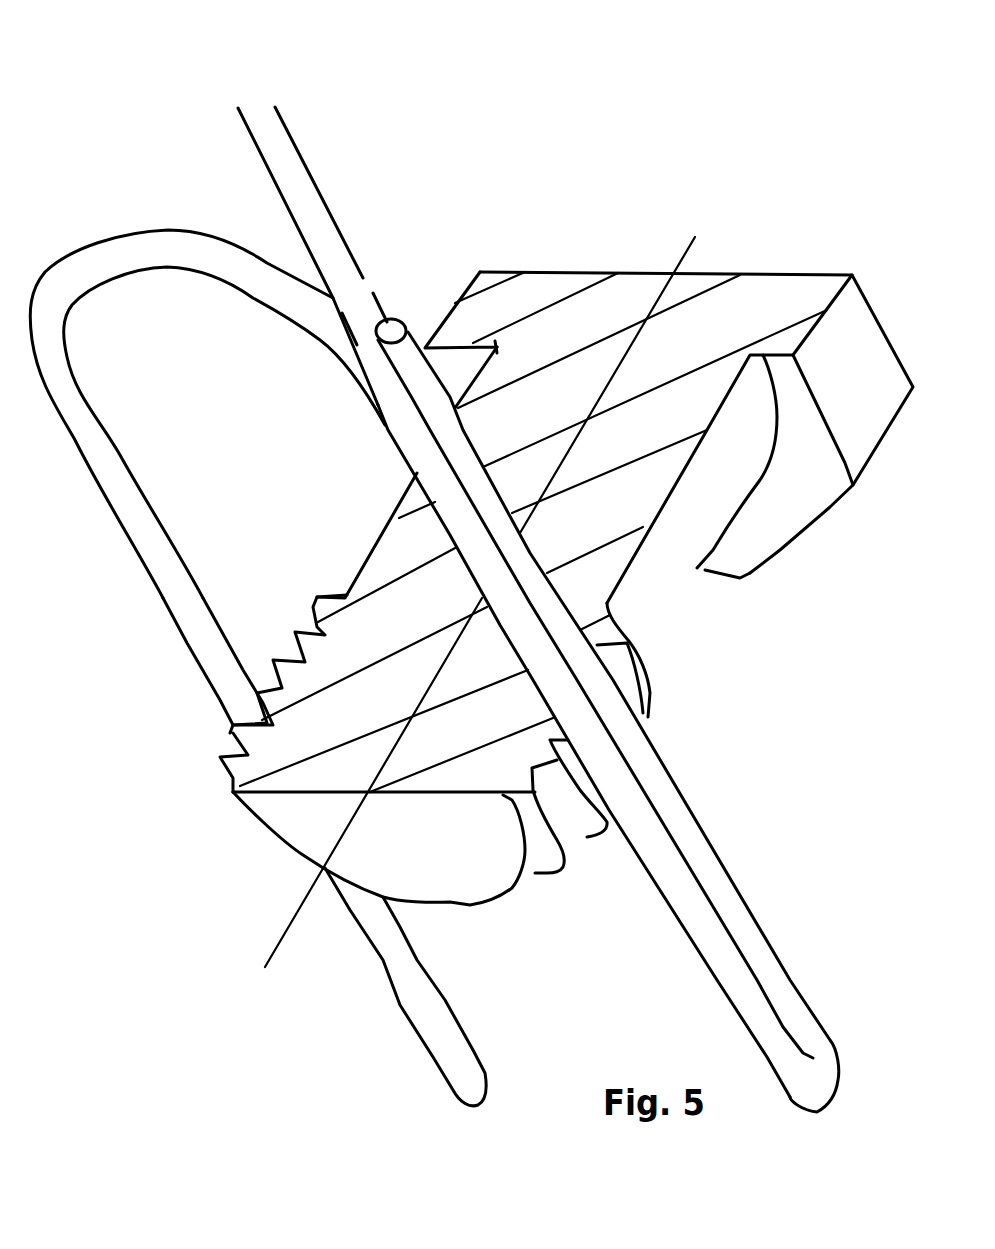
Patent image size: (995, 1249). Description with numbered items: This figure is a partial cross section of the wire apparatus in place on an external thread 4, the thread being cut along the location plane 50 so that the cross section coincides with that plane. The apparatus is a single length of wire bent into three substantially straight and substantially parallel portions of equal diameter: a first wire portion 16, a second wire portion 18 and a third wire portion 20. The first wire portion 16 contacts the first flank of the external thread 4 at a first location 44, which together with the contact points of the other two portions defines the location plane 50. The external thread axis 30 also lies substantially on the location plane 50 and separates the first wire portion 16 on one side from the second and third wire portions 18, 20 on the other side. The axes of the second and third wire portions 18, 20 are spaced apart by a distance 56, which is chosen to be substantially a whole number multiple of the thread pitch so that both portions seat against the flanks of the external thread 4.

The external thread 4 is at (337, 626).
The first wire portion 16 is at (400, 1005).
The second wire portion 18 is at (683, 923).
The third wire portion 20 is at (434, 561).
The external thread axis 30 is at (682, 258).
The first location 44 is at (263, 707).
The location plane 50 is at (558, 332).
The distance 56 is at (205, 182).